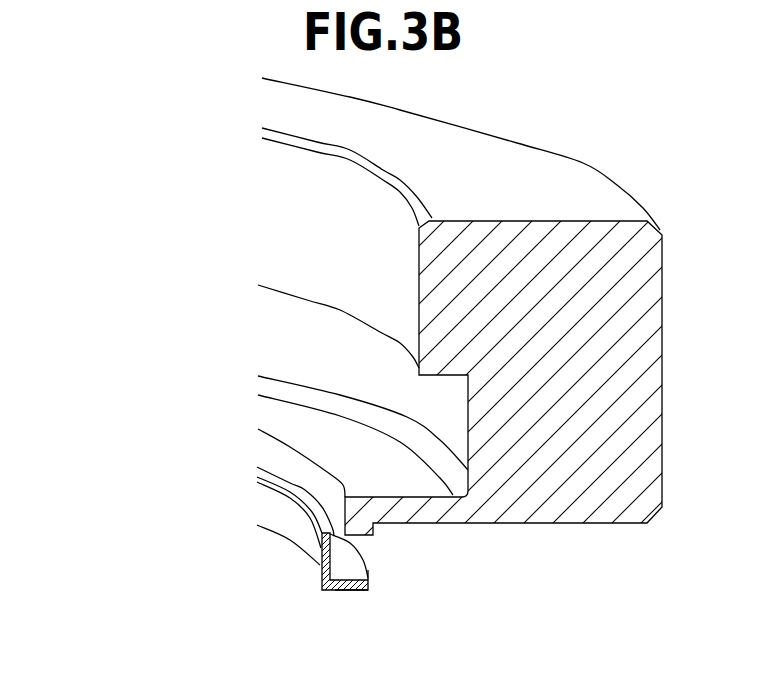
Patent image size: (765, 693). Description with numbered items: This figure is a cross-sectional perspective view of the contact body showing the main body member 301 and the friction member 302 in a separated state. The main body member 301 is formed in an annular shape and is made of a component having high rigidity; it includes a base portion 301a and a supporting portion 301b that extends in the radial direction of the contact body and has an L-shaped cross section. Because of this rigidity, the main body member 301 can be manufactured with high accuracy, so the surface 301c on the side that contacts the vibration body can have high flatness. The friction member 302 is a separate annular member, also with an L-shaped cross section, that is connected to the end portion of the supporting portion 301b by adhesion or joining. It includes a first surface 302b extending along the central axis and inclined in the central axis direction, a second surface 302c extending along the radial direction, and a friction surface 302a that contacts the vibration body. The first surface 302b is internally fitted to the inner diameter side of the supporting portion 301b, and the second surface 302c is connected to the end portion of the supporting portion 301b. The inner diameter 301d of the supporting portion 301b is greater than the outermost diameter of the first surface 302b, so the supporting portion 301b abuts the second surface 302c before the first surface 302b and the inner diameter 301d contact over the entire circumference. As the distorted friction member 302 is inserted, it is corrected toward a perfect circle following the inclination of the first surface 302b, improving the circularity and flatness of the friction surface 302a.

The main body member 301 is at (163, 285).
The base portion 301a is at (398, 318).
The supporting portion 301b is at (367, 468).
The surface 301c is at (335, 499).
The inner diameter 301d is at (338, 479).
The friction member 302 is at (332, 590).
The friction surface 302a is at (355, 590).
The first surface 302b is at (338, 545).
The second surface 302c is at (368, 572).